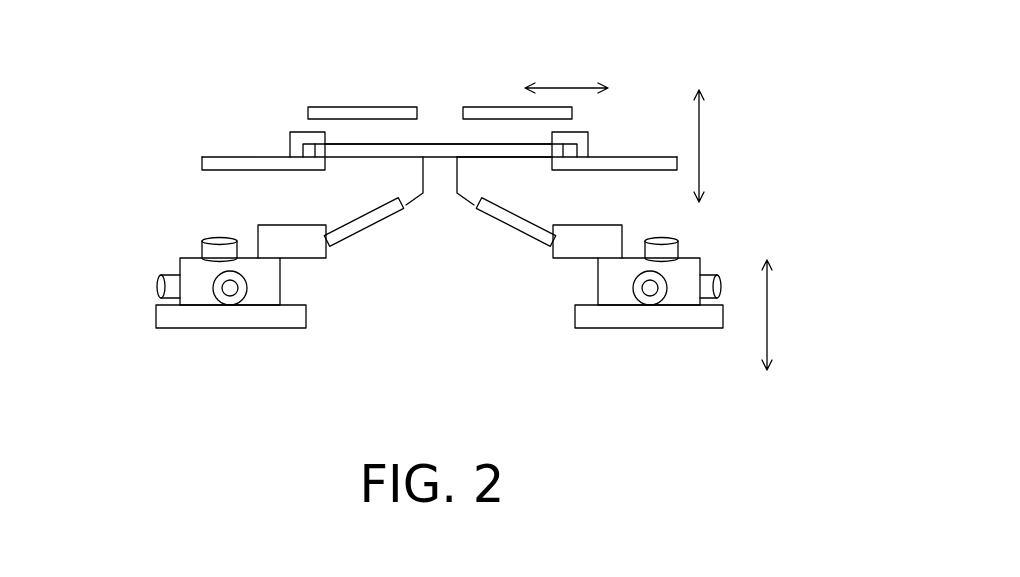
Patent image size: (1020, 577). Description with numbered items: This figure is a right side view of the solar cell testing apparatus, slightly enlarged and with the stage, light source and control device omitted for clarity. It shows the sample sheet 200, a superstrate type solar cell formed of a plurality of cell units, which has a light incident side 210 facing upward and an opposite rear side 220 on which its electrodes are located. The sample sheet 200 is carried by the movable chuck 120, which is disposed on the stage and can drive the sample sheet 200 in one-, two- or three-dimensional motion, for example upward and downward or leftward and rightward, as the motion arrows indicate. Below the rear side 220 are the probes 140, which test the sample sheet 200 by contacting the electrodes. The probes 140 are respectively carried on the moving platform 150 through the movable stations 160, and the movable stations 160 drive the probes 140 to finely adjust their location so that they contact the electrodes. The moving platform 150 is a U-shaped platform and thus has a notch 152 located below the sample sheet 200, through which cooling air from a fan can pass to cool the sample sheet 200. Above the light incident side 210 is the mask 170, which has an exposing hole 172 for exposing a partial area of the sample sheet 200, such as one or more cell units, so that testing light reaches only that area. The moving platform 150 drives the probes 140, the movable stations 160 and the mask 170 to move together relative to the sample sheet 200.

The movable chuck 120 is at (213, 165).
The probes 140 is at (423, 183).
The moving platform 150 is at (170, 316).
The notch 152 is at (342, 328).
The movable stations 160 is at (193, 273).
The mask 170 is at (315, 115).
The exposing hole 172 is at (440, 103).
The sample sheet 200 is at (363, 153).
The light incident side 210 is at (490, 145).
The rear side 220 is at (516, 159).